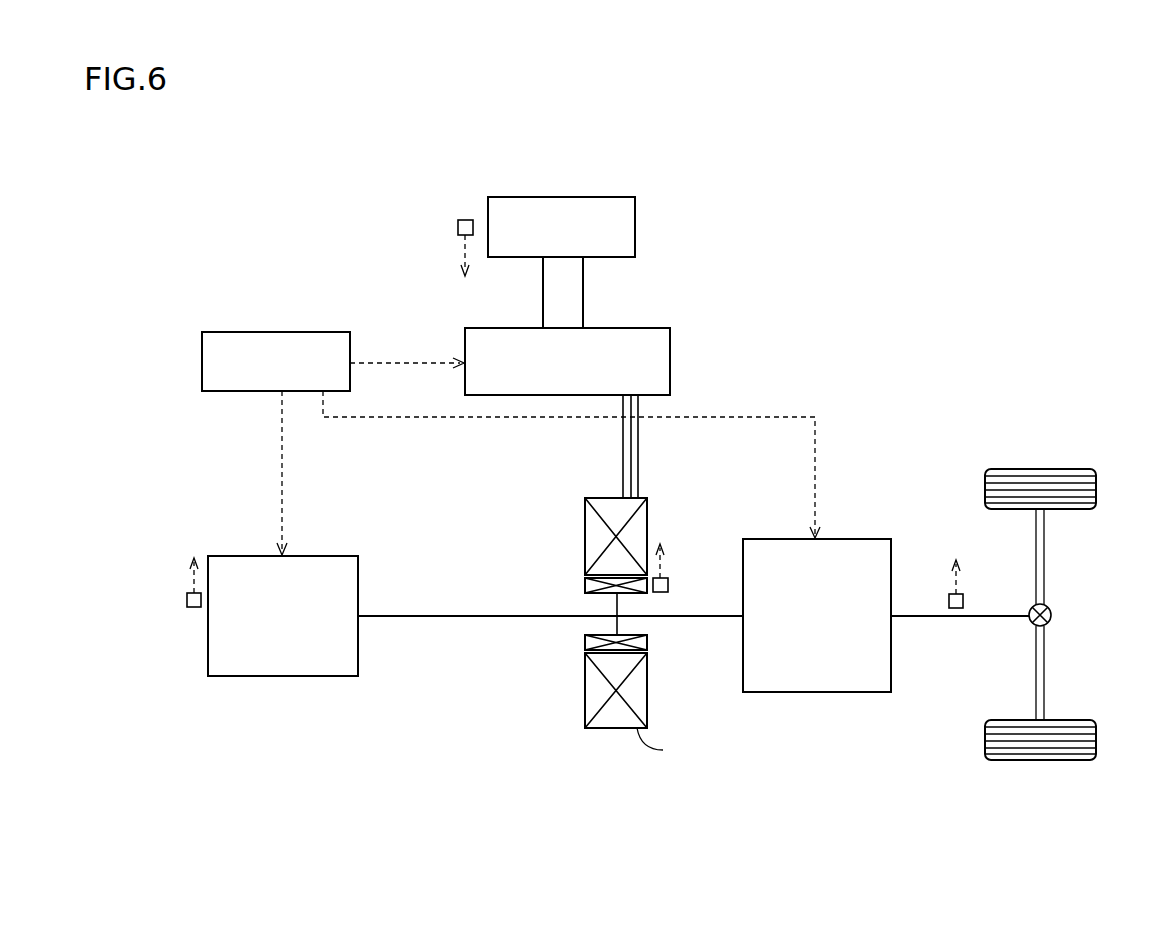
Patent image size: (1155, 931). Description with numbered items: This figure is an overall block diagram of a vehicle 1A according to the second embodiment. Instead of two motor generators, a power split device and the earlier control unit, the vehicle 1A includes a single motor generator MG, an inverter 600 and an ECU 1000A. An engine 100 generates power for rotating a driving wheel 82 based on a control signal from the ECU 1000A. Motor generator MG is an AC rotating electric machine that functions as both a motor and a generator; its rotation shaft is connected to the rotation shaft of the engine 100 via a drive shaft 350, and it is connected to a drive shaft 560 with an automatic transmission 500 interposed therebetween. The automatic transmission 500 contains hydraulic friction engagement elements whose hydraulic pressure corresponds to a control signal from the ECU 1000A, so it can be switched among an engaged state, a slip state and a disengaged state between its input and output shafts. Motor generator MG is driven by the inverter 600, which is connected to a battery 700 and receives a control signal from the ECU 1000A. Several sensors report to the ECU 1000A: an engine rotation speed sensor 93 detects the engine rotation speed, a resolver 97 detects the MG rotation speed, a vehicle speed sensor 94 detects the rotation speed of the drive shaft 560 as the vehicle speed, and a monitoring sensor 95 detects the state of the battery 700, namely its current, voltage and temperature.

The vehicle 1A is at (378, 140).
The battery 700 is at (635, 219).
The inverter 600 is at (620, 328).
The monitoring sensor 95 is at (465, 220).
The ECU 1000A is at (202, 362).
The engine 100 is at (285, 676).
The engine rotation speed sensor 93 is at (187, 600).
The drive shaft 350 is at (490, 617).
The resolver 97 is at (668, 585).
The automatic transmission 500 is at (808, 692).
The drive shaft 560 is at (922, 617).
The vehicle speed sensor 94 is at (963, 598).
The driving wheel 82 is at (1064, 469).